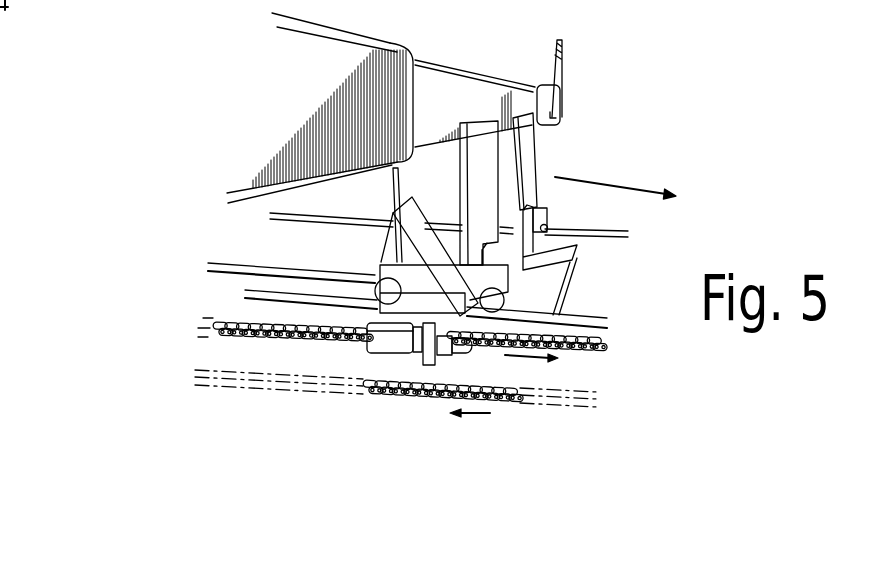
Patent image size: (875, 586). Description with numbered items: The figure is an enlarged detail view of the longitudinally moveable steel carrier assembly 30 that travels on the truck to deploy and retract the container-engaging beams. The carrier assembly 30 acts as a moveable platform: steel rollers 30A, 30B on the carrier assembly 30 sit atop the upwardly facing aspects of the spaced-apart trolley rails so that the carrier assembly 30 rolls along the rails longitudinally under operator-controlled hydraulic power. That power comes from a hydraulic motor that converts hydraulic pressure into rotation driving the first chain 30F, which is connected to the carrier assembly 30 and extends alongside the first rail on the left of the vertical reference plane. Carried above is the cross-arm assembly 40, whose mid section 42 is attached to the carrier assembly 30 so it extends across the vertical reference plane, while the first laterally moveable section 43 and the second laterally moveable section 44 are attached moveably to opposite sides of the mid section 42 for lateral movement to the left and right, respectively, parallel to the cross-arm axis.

The carrier assembly 30 is at (385, 263).
The steel roller 30A is at (383, 274).
The steel roller 30B is at (500, 294).
The first chain 30F is at (267, 336).
The cross-arm assembly 40 is at (576, 58).
The mid section 42 is at (472, 85).
The first laterally moveable section 43 is at (393, 47).
The second laterally moveable section 44 is at (552, 103).